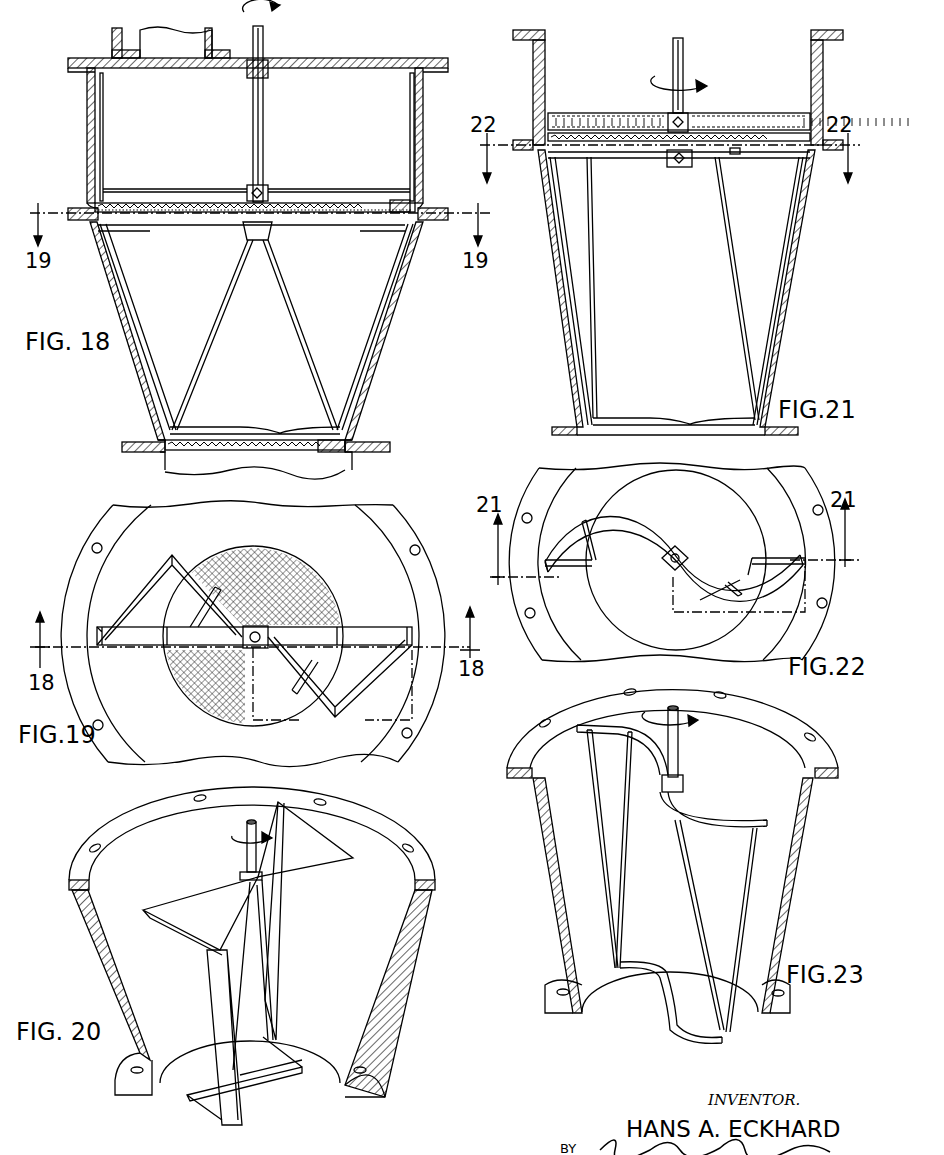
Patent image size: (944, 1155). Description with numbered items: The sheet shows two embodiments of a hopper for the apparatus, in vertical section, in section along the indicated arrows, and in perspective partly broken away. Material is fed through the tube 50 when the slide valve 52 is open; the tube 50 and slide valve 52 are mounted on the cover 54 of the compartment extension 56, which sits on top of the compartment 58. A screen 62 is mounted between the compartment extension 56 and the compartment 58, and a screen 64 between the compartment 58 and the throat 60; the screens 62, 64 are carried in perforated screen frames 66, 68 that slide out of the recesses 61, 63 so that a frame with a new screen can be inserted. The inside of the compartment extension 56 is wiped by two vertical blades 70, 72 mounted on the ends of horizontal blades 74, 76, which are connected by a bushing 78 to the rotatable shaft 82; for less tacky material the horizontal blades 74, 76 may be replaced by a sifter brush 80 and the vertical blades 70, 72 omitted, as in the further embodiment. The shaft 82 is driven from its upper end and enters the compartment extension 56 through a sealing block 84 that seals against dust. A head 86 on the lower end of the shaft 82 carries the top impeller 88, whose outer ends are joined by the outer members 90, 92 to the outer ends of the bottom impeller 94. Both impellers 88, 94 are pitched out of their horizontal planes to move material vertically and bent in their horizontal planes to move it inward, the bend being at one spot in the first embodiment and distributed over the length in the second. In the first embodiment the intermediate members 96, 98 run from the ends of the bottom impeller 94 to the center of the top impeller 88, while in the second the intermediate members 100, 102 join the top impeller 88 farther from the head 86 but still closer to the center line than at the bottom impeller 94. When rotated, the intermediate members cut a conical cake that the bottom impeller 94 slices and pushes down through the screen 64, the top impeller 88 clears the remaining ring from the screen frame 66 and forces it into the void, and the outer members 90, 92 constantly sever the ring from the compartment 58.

In FIG. 18, the tube 50 is at (200, 27).
In FIG. 18, the slide valve 52 is at (186, 57).
In FIG. 18, the cover 54 is at (356, 60).
In FIG. 18, the compartment extension 56 is at (87, 110).
In FIG. 21, the compartment extension 56 is at (812, 62).
In FIG. 18, the compartment 58 is at (389, 316).
In FIG. 19, the compartment 58 is at (402, 508).
In FIG. 20, the compartment 58 is at (391, 967).
In FIG. 21, the compartment 58 is at (801, 274).
In FIG. 22, the compartment 58 is at (796, 491).
In FIG. 23, the compartment 58 is at (790, 873).
In FIG. 18, the throat 60 is at (355, 468).
In FIG. 18, the recess 61 is at (94, 218).
In FIG. 21, the recess 61 is at (534, 153).
In FIG. 18, the screen 62 is at (134, 207).
In FIG. 21, the screen 62 is at (767, 148).
In FIG. 18, the recess 63 is at (150, 438).
In FIG. 18, the screen 64 is at (292, 455).
In FIG. 18, the screen frame 66 is at (400, 202).
In FIG. 21, the screen frame 66 is at (737, 155).
In FIG. 18, the screen frame 68 is at (206, 455).
In FIG. 18, the vertical blade 70 is at (104, 120).
In FIG. 18, the vertical blade 72 is at (411, 128).
In FIG. 18, the horizontal blade 74 is at (184, 190).
In FIG. 18, the horizontal blade 76 is at (306, 190).
In FIG. 18, the bushing 78 is at (262, 189).
In FIG. 21, the bushing 78 is at (690, 116).
In FIG. 21, the sifter brush 80 is at (746, 118).
In FIG. 18, the rotatable shaft 82 is at (263, 107).
In FIG. 20, the rotatable shaft 82 is at (247, 827).
In FIG. 21, the rotatable shaft 82 is at (683, 56).
In FIG. 23, the rotatable shaft 82 is at (680, 742).
In FIG. 18, the sealing block 84 is at (270, 60).
In FIG. 18, the head 86 is at (258, 241).
In FIG. 19, the head 86 is at (258, 630).
In FIG. 20, the head 86 is at (240, 875).
In FIG. 21, the head 86 is at (683, 167).
In FIG. 22, the head 86 is at (682, 557).
In FIG. 23, the head 86 is at (684, 779).
In FIG. 18, the top impeller 88 is at (200, 231).
In FIG. 19, the top impeller 88 is at (169, 568).
In FIG. 20, the top impeller 88 is at (333, 863).
In FIG. 21, the top impeller 88 is at (640, 159).
In FIG. 22, the top impeller 88 is at (667, 546).
In FIG. 23, the top impeller 88 is at (716, 820).
In FIG. 18, the outer member 90 is at (132, 300).
In FIG. 19, the outer member 90 is at (134, 648).
In FIG. 20, the outer member 90 is at (213, 1018).
In FIG. 21, the outer member 90 is at (572, 187).
In FIG. 22, the outer member 90 is at (566, 568).
In FIG. 23, the outer member 90 is at (599, 856).
In FIG. 18, the outer member 92 is at (385, 296).
In FIG. 19, the outer member 92 is at (356, 633).
In FIG. 20, the outer member 92 is at (284, 928).
In FIG. 21, the outer member 92 is at (792, 240).
In FIG. 22, the outer member 92 is at (767, 557).
In FIG. 23, the outer member 92 is at (746, 884).
In FIG. 18, the bottom impeller 94 is at (300, 428).
In FIG. 19, the bottom impeller 94 is at (188, 621).
In FIG. 20, the bottom impeller 94 is at (290, 1076).
In FIG. 21, the bottom impeller 94 is at (651, 413).
In FIG. 22, the bottom impeller 94 is at (628, 548).
In FIG. 23, the bottom impeller 94 is at (660, 1028).
In FIG. 18, the intermediate member 96 is at (211, 328).
In FIG. 20, the intermediate member 96 is at (243, 910).
In FIG. 18, the intermediate member 98 is at (312, 353).
In FIG. 19, the intermediate member 98 is at (298, 632).
In FIG. 20, the intermediate member 98 is at (265, 966).
In FIG. 21, the intermediate member 100 is at (597, 270).
In FIG. 22, the intermediate member 100 is at (582, 521).
In FIG. 23, the intermediate member 100 is at (622, 881).
In FIG. 21, the intermediate member 102 is at (729, 270).
In FIG. 22, the intermediate member 102 is at (720, 600).
In FIG. 23, the intermediate member 102 is at (693, 915).